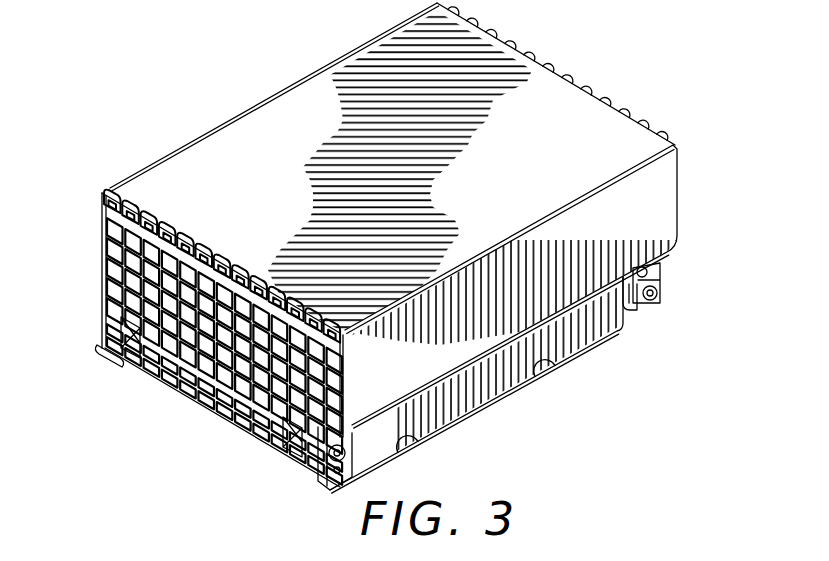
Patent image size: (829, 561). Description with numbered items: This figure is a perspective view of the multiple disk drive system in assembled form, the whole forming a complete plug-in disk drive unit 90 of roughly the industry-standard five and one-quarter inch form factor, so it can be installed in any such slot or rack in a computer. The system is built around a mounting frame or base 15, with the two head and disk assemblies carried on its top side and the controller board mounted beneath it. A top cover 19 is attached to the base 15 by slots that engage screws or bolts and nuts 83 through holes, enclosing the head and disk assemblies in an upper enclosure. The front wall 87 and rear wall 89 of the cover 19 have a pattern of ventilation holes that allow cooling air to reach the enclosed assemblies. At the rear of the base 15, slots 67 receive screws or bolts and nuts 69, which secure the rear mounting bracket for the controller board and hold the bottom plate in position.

The base 15 is at (97, 322).
The top cover 19 is at (323, 57).
The slots 67 is at (631, 322).
The screws or bolts and nuts 69 is at (651, 300).
The screws or bolts and nuts 83 is at (318, 467).
The front wall 87 is at (100, 242).
The rear wall 89 is at (558, 62).
The disk drive unit 90 is at (180, 427).